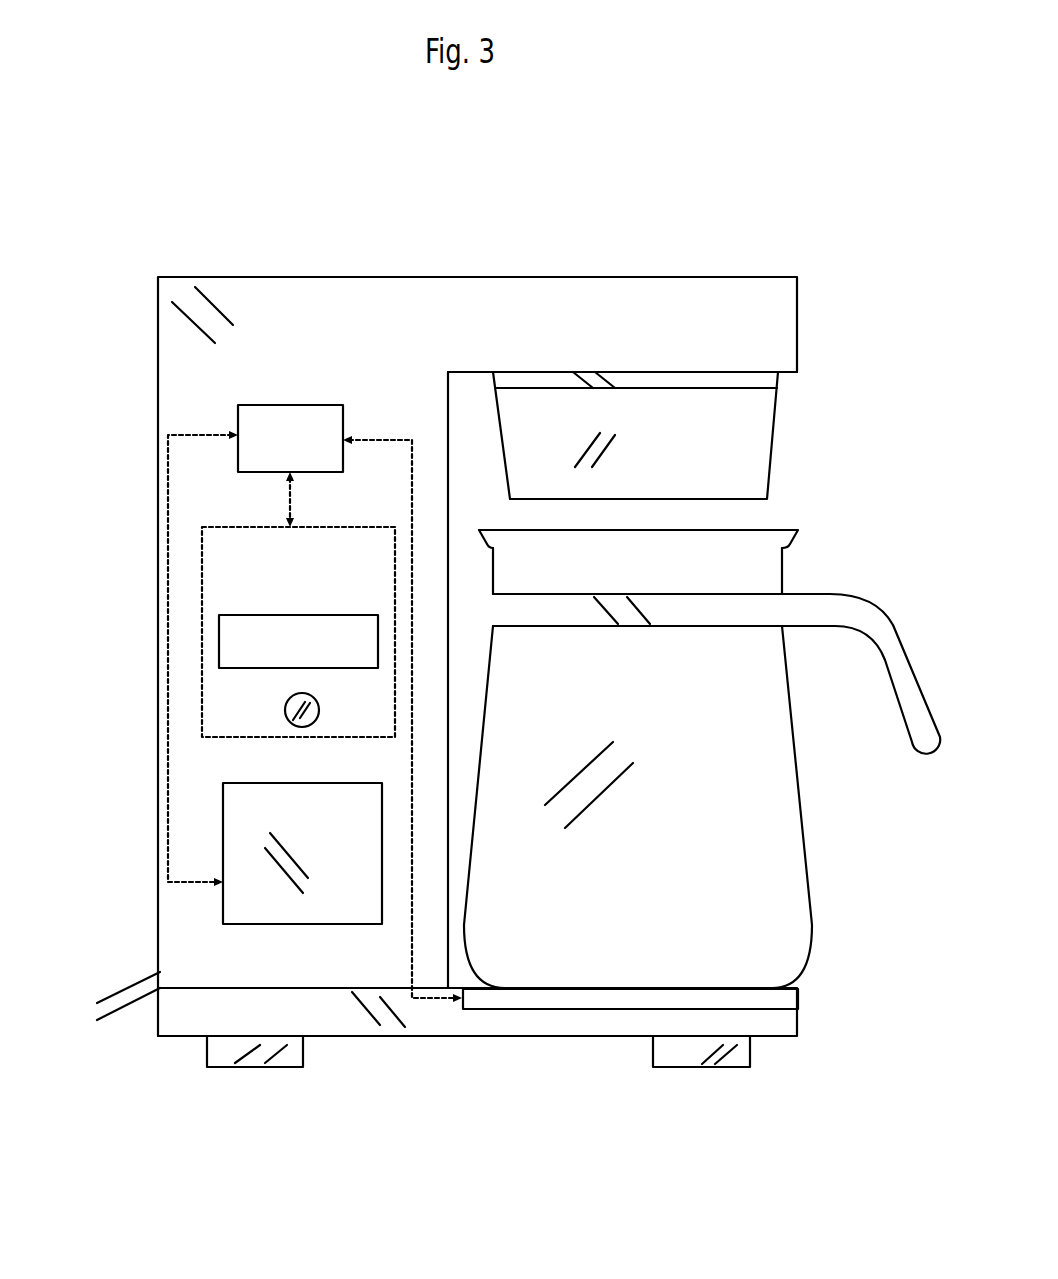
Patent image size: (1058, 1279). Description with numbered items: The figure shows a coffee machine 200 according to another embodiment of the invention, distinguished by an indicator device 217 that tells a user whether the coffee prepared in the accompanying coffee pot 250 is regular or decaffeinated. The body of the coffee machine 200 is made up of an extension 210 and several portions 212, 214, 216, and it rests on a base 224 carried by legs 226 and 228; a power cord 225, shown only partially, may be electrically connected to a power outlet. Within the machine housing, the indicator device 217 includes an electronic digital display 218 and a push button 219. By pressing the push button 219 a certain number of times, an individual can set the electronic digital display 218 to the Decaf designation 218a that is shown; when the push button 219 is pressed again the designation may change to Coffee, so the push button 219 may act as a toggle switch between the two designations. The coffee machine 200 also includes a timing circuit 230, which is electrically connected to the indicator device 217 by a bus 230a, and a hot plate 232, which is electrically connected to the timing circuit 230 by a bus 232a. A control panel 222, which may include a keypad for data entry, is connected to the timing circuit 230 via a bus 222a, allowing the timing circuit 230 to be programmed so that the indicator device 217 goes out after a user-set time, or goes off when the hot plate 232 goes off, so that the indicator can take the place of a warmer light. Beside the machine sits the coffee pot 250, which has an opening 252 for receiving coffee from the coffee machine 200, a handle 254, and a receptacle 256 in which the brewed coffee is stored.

The coffee machine 200 is at (678, 258).
The extension 210 is at (531, 312).
The portion 212 is at (703, 457).
The portion 214 is at (767, 384).
The portion 216 is at (213, 377).
The indicator device 217 is at (335, 532).
The electronic digital display 218 is at (283, 613).
The Decaf designation 218a is at (345, 628).
The push button 219 is at (292, 703).
The control panel 222 is at (267, 897).
The bus 222a is at (168, 628).
The base 224 is at (207, 1009).
The power cord 225 is at (137, 985).
The leg 226 is at (290, 1057).
The leg 228 is at (667, 1050).
The timing circuit 230 is at (298, 422).
The bus 230a is at (288, 507).
The hot plate 232 is at (793, 1000).
The bus 232a is at (412, 790).
The coffee pot 250 is at (858, 568).
The opening 252 is at (767, 530).
The handle 254 is at (858, 615).
The receptacle 256 is at (750, 904).